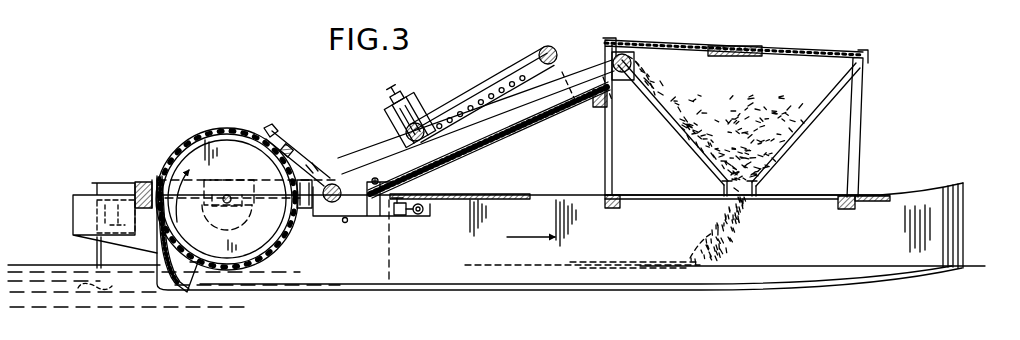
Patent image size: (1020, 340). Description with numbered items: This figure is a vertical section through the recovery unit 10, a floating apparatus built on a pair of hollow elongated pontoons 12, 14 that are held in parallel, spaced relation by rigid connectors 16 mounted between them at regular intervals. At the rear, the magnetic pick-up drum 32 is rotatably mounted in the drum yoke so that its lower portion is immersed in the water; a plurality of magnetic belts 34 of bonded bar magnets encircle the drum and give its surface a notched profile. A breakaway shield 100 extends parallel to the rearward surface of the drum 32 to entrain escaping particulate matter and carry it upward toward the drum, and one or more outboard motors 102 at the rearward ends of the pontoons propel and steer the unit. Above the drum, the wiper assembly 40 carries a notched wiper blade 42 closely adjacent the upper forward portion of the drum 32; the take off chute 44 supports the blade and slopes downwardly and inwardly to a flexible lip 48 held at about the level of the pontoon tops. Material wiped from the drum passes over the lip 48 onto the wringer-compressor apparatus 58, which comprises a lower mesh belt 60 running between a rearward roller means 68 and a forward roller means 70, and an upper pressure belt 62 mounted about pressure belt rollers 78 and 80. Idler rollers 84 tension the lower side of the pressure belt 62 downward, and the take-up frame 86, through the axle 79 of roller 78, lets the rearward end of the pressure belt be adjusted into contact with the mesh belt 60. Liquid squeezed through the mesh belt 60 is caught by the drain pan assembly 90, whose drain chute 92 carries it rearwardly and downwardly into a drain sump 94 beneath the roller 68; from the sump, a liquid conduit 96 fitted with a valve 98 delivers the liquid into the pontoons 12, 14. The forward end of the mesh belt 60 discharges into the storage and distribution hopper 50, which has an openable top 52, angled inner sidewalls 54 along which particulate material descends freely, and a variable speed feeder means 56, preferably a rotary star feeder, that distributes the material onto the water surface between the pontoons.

The recovery unit 10 is at (158, 4).
The pontoon 12 is at (850, 3).
The pontoon 14 is at (914, 202).
The rigid connectors 16 is at (137, 182).
The magnetic pick-up drum 32 is at (192, 160).
The magnetic belts 34 is at (207, 131).
The wiper assembly 40 is at (293, 138).
The wiper blade 42 is at (276, 130).
The take off chute 44 is at (312, 162).
The flexible lip 48 is at (352, 210).
The storage and distribution hopper 50 is at (806, 50).
The openable top 52 is at (733, 45).
The inner sidewalls 54 is at (672, 128).
The variable speed feeder means 56 is at (742, 200).
The wringer-compressor apparatus 58 is at (570, 50).
The lower mesh belt 60 is at (584, 60).
The upper pressure belt 62 is at (497, 72).
The rearward roller means 68 is at (332, 204).
The forward roller means 70 is at (620, 50).
The pressure belt roller 78 is at (426, 152).
The axle 79 is at (403, 137).
The pressure belt roller 80 is at (550, 46).
The idler rollers 84 is at (460, 124).
The take-up frame 86 is at (424, 100).
The drain pan assembly 90 is at (508, 143).
The drain chute 92 is at (568, 118).
The drain sump 94 is at (380, 216).
The liquid conduit 96 is at (421, 210).
The valve 98 is at (403, 216).
The breakaway shield 100 is at (172, 275).
The outboard motors 102 is at (97, 243).